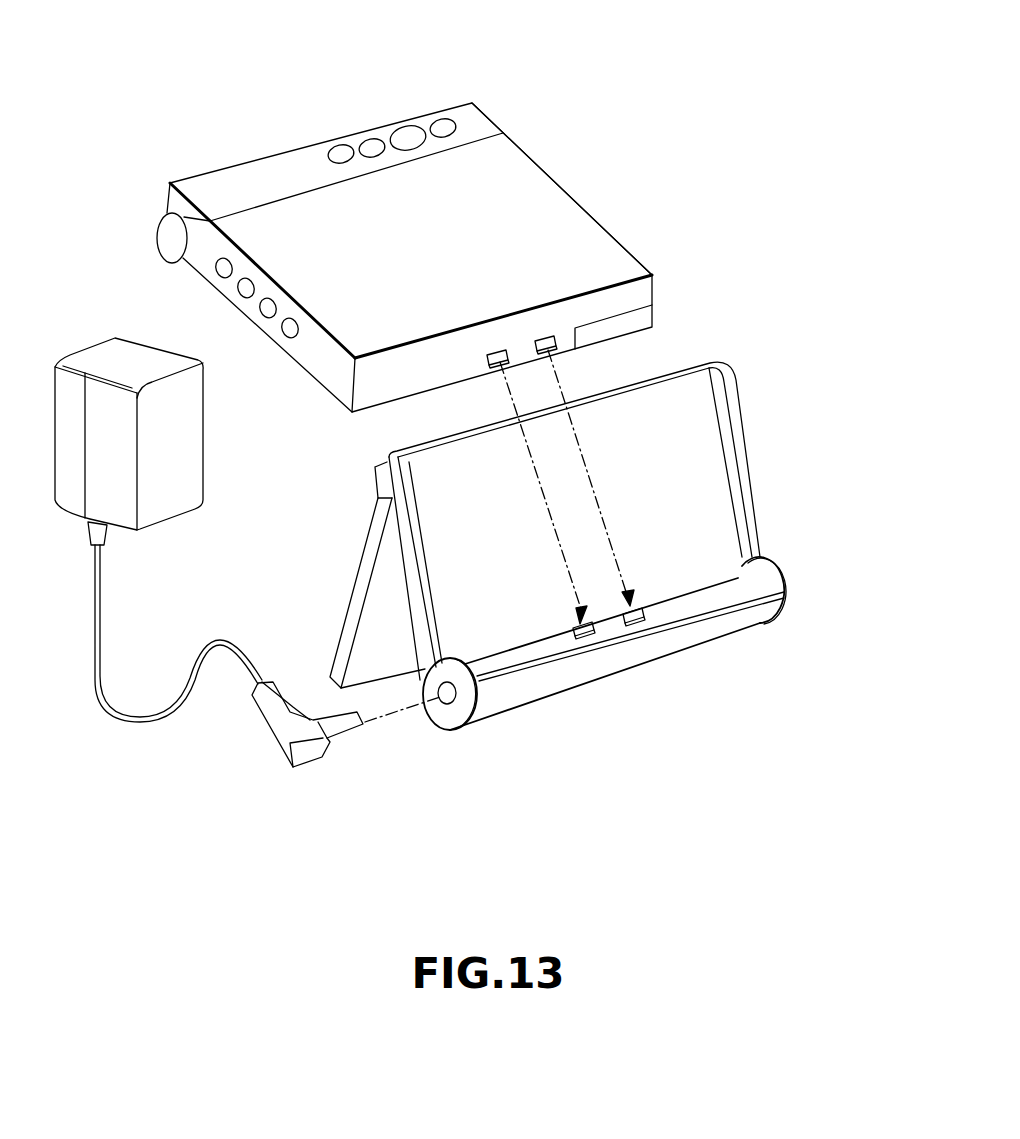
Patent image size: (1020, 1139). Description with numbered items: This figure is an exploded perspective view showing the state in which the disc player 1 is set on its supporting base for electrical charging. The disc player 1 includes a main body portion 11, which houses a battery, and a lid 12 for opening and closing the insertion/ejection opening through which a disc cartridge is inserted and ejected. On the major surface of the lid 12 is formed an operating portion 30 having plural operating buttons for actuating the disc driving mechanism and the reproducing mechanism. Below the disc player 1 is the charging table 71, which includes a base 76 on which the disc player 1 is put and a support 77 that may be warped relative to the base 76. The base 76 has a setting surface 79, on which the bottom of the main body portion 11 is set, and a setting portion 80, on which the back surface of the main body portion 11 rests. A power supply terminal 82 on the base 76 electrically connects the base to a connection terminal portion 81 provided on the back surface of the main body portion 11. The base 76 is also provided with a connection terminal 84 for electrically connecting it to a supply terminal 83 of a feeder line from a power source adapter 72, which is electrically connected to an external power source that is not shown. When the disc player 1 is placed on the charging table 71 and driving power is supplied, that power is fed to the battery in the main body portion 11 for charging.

The disc player 1 is at (548, 208).
The main body portion 11 is at (632, 252).
The lid 12 is at (280, 176).
The operating portion 30 is at (424, 124).
The connection terminal portion 81 is at (497, 352).
The charging table 71 is at (810, 589).
The setting surface 79 is at (652, 438).
The base 76 is at (408, 612).
The support 77 is at (355, 597).
The setting portion 80 is at (700, 640).
The power supply terminal 82 is at (574, 622).
The connection terminal 84 is at (449, 700).
The power source adapter 72 is at (168, 492).
The supply terminal 83 is at (348, 727).